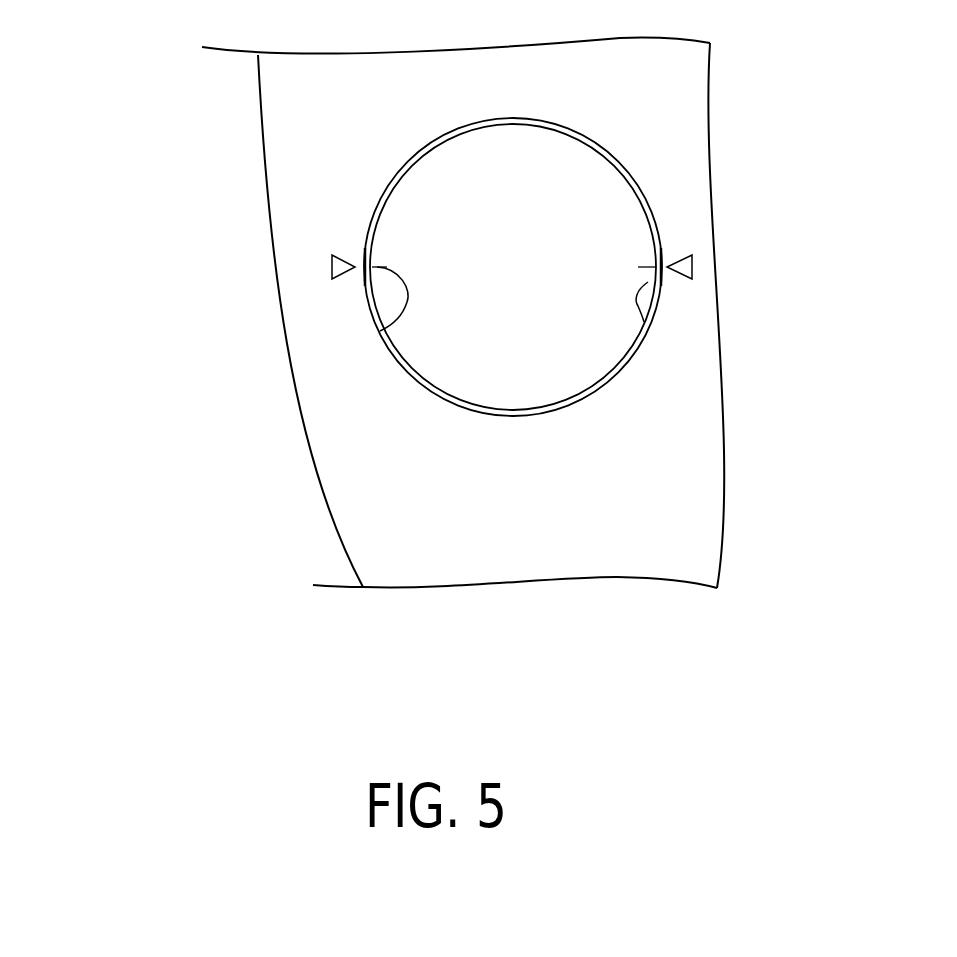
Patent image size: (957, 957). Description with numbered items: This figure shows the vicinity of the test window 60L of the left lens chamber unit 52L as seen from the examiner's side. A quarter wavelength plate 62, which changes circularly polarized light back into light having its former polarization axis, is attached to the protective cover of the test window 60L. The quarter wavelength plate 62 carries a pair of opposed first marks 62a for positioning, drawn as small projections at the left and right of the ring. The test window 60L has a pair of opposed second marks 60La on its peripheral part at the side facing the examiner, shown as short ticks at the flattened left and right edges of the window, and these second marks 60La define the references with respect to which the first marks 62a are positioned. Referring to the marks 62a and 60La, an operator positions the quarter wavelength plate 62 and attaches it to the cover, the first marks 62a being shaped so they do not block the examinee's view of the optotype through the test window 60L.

The left lens chamber unit 52L is at (243, 525).
The quarter wavelength plate 62 is at (385, 220).
The test window 60L is at (368, 233).
The second marks 60La is at (332, 266).
The first marks 62a is at (393, 320).